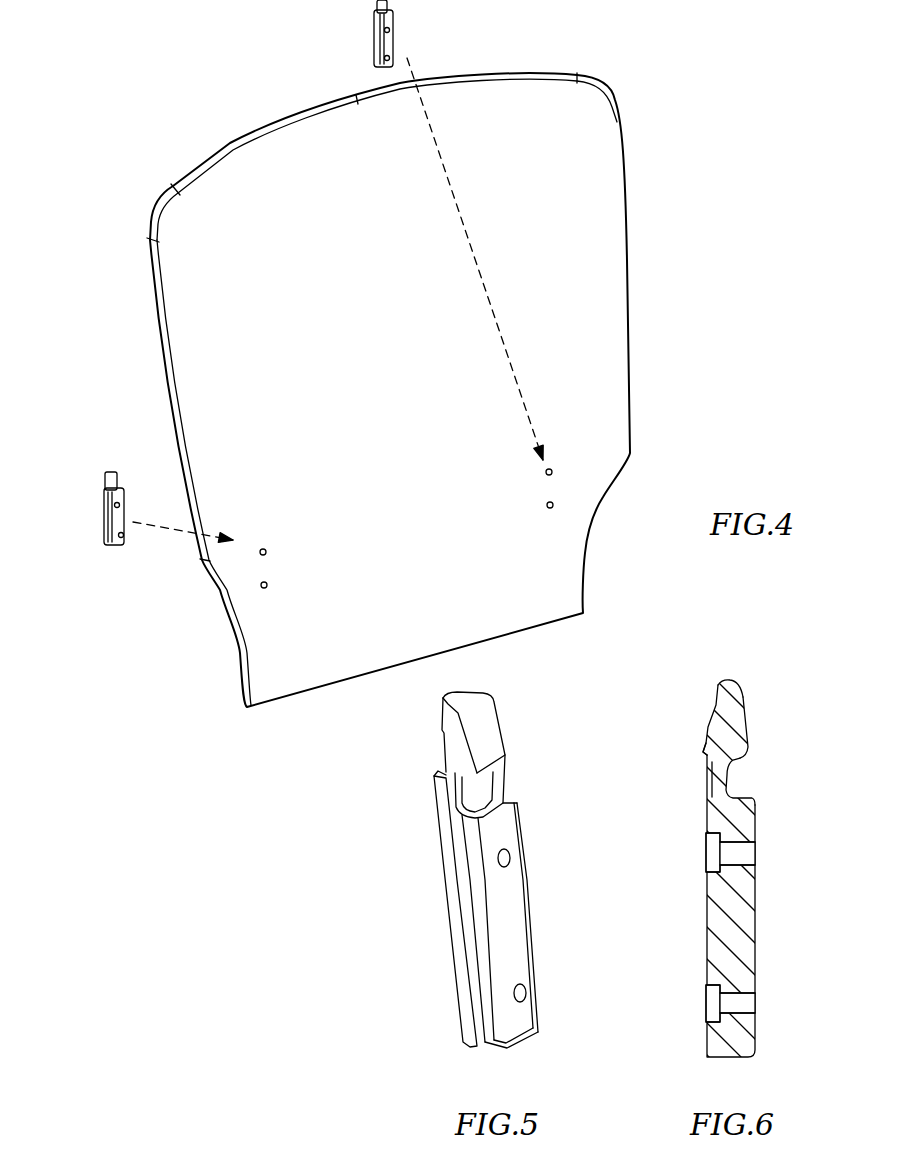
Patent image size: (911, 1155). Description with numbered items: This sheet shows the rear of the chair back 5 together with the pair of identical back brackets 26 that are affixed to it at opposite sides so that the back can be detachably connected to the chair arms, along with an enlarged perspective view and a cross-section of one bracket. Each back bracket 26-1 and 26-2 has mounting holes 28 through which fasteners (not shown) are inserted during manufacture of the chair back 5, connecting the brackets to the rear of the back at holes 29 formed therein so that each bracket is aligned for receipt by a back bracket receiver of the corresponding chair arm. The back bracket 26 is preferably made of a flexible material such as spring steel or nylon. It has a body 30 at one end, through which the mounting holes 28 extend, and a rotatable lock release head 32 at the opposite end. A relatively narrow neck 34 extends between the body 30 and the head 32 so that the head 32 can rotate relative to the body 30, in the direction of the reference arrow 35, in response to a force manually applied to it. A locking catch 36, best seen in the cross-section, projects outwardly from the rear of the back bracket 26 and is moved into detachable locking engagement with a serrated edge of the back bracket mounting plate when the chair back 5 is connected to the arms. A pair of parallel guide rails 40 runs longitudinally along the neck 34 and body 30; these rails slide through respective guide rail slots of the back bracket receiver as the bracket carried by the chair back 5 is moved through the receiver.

In FIG. 4, the chair back 5 is at (642, 250).
In FIG. 5, the back bracket 26 is at (505, 869).
In FIG. 6, the back bracket 26 is at (621, 850).
In FIG. 4, the back bracket 26-1 is at (106, 520).
In FIG. 4, the back bracket 26-2 is at (373, 40).
In FIG. 4, the mounting holes 28 is at (391, 57).
In FIG. 5, the mounting holes 28 is at (509, 853).
In FIG. 6, the mounting holes 28 is at (745, 852).
In FIG. 4, the holes 29 is at (267, 584).
In FIG. 5, the body 30 is at (520, 950).
In FIG. 6, the body 30 is at (737, 912).
In FIG. 5, the rotatable lock release head 32 is at (485, 715).
In FIG. 6, the rotatable lock release head 32 is at (756, 701).
In FIG. 5, the neck 34 is at (483, 778).
In FIG. 6, the neck 34 is at (722, 782).
In FIG. 6, the reference arrow 35 is at (738, 682).
In FIG. 6, the locking catch 36 is at (702, 753).
In FIG. 5, the guide rails 40 is at (497, 785).